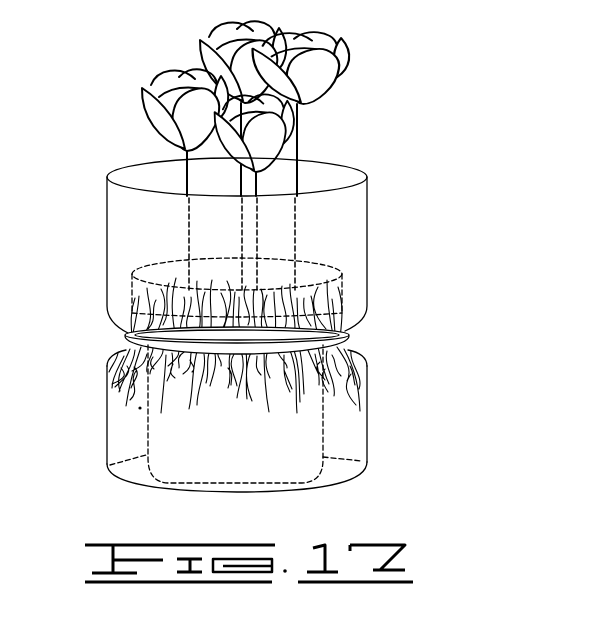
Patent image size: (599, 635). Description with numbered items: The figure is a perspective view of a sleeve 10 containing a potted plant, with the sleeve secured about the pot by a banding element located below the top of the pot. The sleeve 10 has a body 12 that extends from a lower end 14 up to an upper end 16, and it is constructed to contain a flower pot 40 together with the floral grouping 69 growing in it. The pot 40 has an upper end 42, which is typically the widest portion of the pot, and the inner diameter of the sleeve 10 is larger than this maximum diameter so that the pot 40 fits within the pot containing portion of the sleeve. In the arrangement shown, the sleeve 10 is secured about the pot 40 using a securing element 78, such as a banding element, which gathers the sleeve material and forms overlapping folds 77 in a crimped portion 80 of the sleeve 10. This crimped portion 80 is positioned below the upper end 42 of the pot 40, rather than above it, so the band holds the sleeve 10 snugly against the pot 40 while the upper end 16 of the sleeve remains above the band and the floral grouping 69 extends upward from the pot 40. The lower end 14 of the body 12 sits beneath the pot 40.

The sleeve 10 is at (107, 402).
The body 12 is at (367, 439).
The lower end 14 is at (305, 489).
The upper end 16 is at (325, 158).
The pot 40 is at (330, 399).
The upper end 42 is at (333, 262).
The floral grouping 69 is at (348, 98).
The overlapping folds 77 is at (150, 295).
The securing element 78 is at (345, 333).
The crimped portion 80 is at (113, 357).